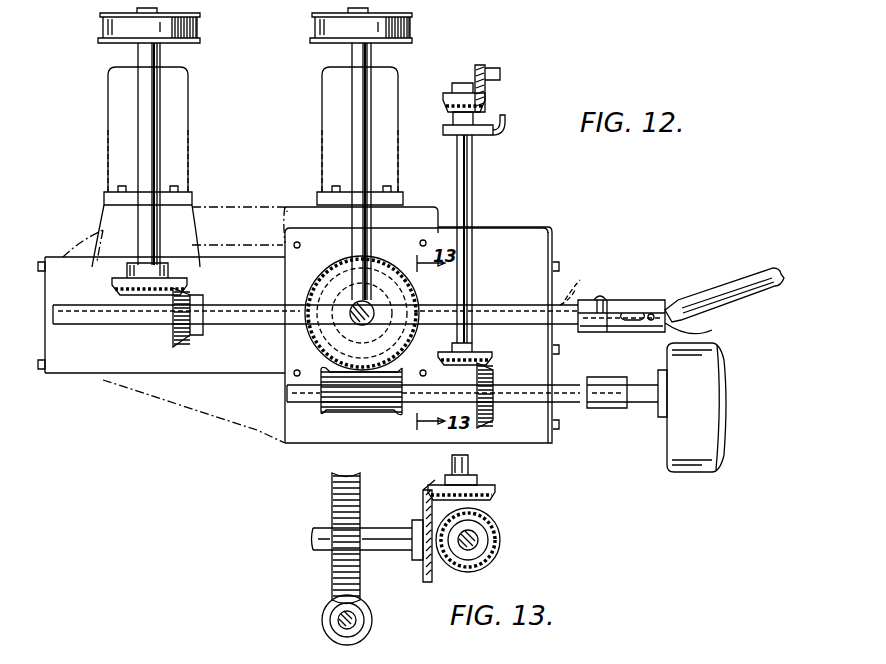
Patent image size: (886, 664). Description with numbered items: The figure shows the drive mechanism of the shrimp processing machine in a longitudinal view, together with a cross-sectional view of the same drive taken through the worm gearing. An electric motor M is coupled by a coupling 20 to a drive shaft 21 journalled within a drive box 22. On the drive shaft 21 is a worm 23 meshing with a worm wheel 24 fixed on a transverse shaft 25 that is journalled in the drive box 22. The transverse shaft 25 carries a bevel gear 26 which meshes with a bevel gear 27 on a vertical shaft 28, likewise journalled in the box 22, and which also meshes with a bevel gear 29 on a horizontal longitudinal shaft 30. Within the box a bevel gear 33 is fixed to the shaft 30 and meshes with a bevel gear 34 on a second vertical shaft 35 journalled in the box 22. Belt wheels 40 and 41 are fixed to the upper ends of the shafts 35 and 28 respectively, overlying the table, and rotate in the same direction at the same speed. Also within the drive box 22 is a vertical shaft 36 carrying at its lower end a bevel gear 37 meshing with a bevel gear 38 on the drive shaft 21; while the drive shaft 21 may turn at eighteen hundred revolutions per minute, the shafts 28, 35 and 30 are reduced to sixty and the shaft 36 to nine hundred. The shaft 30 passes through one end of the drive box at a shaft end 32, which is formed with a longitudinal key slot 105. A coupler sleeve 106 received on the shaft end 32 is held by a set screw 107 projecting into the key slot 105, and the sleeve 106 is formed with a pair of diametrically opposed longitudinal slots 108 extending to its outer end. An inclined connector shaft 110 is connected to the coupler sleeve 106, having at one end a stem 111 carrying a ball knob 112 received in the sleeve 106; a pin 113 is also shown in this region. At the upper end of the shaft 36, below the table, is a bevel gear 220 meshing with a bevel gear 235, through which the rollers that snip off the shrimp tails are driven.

In FIG. 12, the coupling 20 is at (598, 410).
In FIG. 12, the drive shaft 21 is at (522, 403).
In FIG. 13, the drive shaft 21 is at (356, 624).
In FIG. 12, the drive box 22 is at (231, 425).
In FIG. 12, the worm 23 is at (372, 412).
In FIG. 13, the worm 23 is at (325, 628).
In FIG. 12, the worm wheel 24 is at (320, 340).
In FIG. 13, the worm wheel 24 is at (333, 570).
In FIG. 12, the transverse shaft 25 is at (362, 313).
In FIG. 13, the transverse shaft 25 is at (376, 530).
In FIG. 12, the bevel gear 26 is at (380, 300).
In FIG. 13, the bevel gear 26 is at (428, 580).
In FIG. 12, the bevel gear 27 is at (372, 282).
In FIG. 13, the bevel gear 27 is at (495, 494).
In FIG. 12, the vertical shaft 28 is at (372, 168).
In FIG. 13, the vertical shaft 28 is at (452, 464).
In FIG. 12, the bevel gear 29 is at (316, 323).
In FIG. 13, the bevel gear 29 is at (500, 546).
In FIG. 12, the horizontal longitudinal shaft 30 is at (178, 322).
In FIG. 13, the horizontal longitudinal shaft 30 is at (475, 538).
In FIG. 12, the shaft end 32 is at (562, 305).
In FIG. 12, the bevel gear 33 is at (186, 347).
In FIG. 12, the bevel gear 34 is at (190, 285).
In FIG. 12, the vertical shaft 35 is at (160, 162).
In FIG. 12, the vertical shaft 36 is at (468, 180).
In FIG. 12, the bevel gear 37 is at (485, 354).
In FIG. 12, the bevel gear 38 is at (495, 375).
In FIG. 12, the belt wheel 40 is at (100, 22).
In FIG. 12, the belt wheel 41 is at (412, 24).
In FIG. 12, the key slot 105 is at (588, 300).
In FIG. 12, the coupler sleeve 106 is at (638, 295).
In FIG. 12, the set screw 107 is at (605, 298).
In FIG. 12, the longitudinal slots 108 is at (640, 325).
In FIG. 12, the inclined connector shaft 110 is at (742, 275).
In FIG. 12, the stem 111 is at (675, 323).
In FIG. 12, the ball knob 112 is at (635, 315).
In FIG. 12, the pin 113 is at (655, 313).
In FIG. 12, the bevel gear 220 is at (450, 98).
In FIG. 12, the bevel gear 235 is at (488, 95).
In FIG. 12, the electric motor M is at (708, 412).